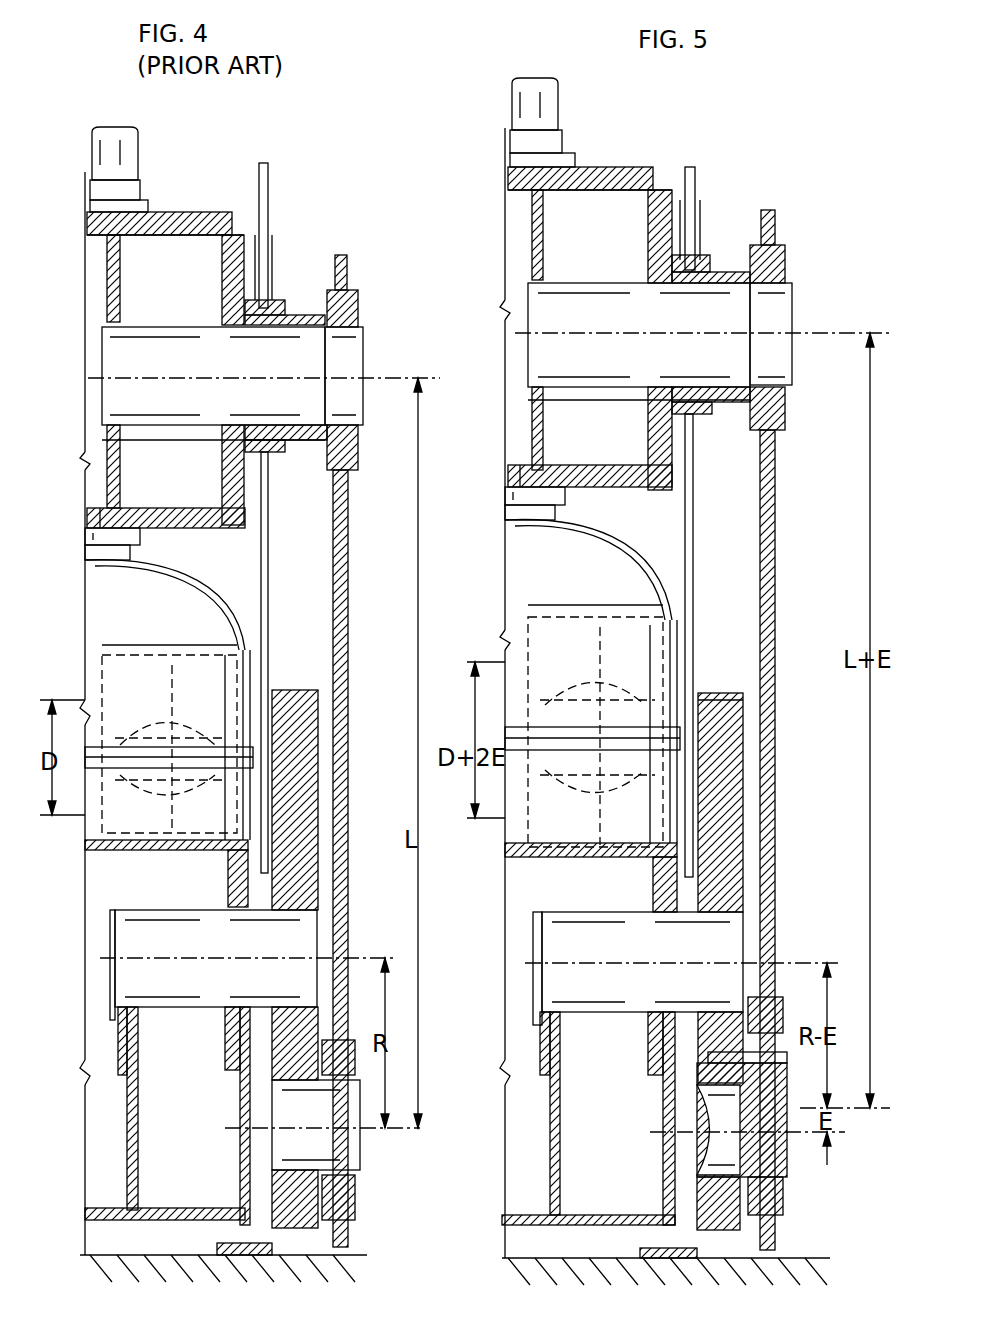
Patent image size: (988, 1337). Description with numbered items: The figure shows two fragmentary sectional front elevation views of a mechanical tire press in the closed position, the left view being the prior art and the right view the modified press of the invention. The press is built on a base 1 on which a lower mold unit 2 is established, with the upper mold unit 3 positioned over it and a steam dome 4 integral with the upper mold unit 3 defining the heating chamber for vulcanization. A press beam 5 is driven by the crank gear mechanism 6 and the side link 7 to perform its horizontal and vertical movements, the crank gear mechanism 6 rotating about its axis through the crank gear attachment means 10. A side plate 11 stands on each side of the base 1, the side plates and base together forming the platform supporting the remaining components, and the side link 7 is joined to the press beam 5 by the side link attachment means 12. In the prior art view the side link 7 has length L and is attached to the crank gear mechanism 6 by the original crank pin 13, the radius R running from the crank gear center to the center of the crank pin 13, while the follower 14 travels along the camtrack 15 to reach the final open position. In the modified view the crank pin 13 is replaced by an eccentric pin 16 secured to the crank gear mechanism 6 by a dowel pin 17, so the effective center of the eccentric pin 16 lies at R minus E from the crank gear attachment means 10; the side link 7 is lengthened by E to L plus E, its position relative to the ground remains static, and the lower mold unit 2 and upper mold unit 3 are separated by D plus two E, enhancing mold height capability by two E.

In FIG. 4, the base 1 is at (87, 840).
In FIG. 5, the base 1 is at (508, 845).
In FIG. 4, the lower mold unit 2 is at (263, 786).
In FIG. 5, the lower mold unit 2 is at (680, 787).
In FIG. 4, the upper mold unit 3 is at (270, 718).
In FIG. 5, the upper mold unit 3 is at (655, 683).
In FIG. 4, the steam dome 4 is at (245, 625).
In FIG. 5, the steam dome 4 is at (665, 575).
In FIG. 4, the press beam 5 is at (206, 212).
In FIG. 5, the press beam 5 is at (622, 167).
In FIG. 4, the crank gear mechanism 6 is at (295, 690).
In FIG. 5, the crank gear mechanism 6 is at (745, 693).
In FIG. 4, the side link 7 is at (350, 503).
In FIG. 5, the side link 7 is at (776, 464).
In FIG. 4, the crank gear attachment means 10 is at (290, 955).
In FIG. 5, the crank gear attachment means 10 is at (690, 960).
In FIG. 4, the side plate 11 is at (268, 205).
In FIG. 5, the side plate 11 is at (695, 200).
In FIG. 4, the side link attachment means 12 is at (308, 377).
In FIG. 5, the side link attachment means 12 is at (705, 333).
In FIG. 4, the crank pin 13 is at (334, 1130).
In FIG. 5, the crank pin 13 is at (790, 1140).
In FIG. 4, the follower 14 is at (284, 300).
In FIG. 5, the follower 14 is at (700, 265).
In FIG. 4, the camtrack 15 is at (268, 232).
In FIG. 5, the camtrack 15 is at (700, 235).
In FIG. 5, the eccentric pin 16 is at (790, 1082).
In FIG. 5, the dowel pin 17 is at (790, 1057).